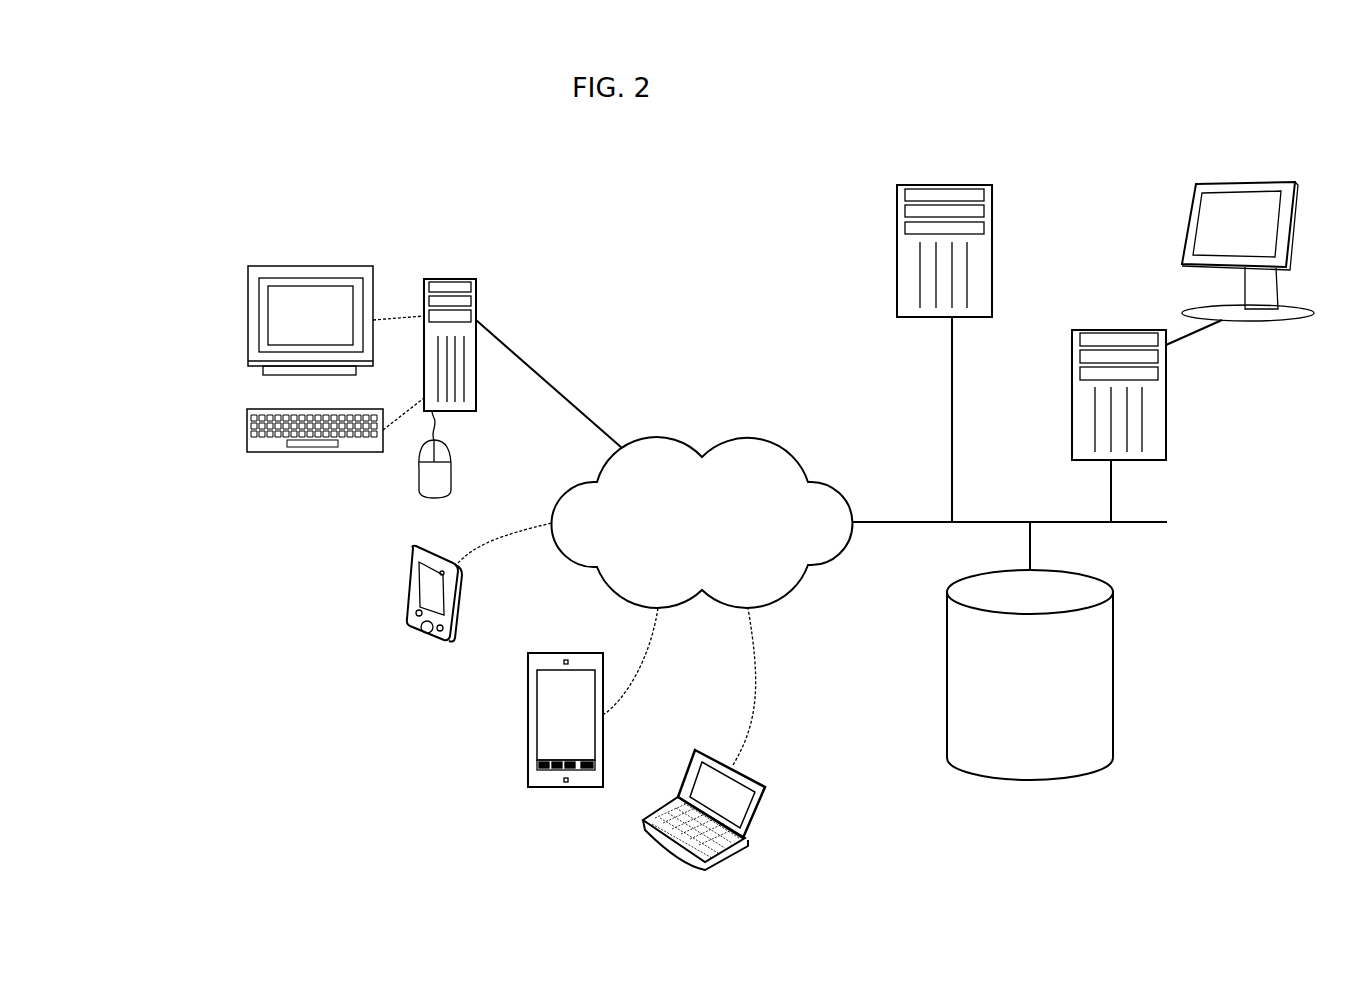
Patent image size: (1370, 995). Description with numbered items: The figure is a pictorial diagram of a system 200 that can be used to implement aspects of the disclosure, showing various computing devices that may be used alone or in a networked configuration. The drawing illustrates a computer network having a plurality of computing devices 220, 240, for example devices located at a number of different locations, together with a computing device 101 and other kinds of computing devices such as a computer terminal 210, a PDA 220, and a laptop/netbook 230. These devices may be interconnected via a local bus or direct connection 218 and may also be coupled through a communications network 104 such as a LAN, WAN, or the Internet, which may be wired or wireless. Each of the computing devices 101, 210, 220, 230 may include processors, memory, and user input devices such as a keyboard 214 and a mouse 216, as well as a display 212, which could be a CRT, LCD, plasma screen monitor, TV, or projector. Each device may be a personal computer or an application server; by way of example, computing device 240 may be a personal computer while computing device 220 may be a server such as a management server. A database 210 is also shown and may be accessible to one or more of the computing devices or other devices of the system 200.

The system 200 is at (1238, 93).
The communications network 104 is at (690, 445).
The computer terminal 210 is at (477, 279).
The display 212 is at (248, 316).
The keyboard 214 is at (248, 430).
The mouse 216 is at (452, 459).
The local bus or direct connection 218 is at (1150, 522).
The computing device 220 is at (995, 237).
The computing device 240 is at (1167, 400).
The computing device 101 is at (527, 770).
The laptop/netbook 230 is at (643, 819).